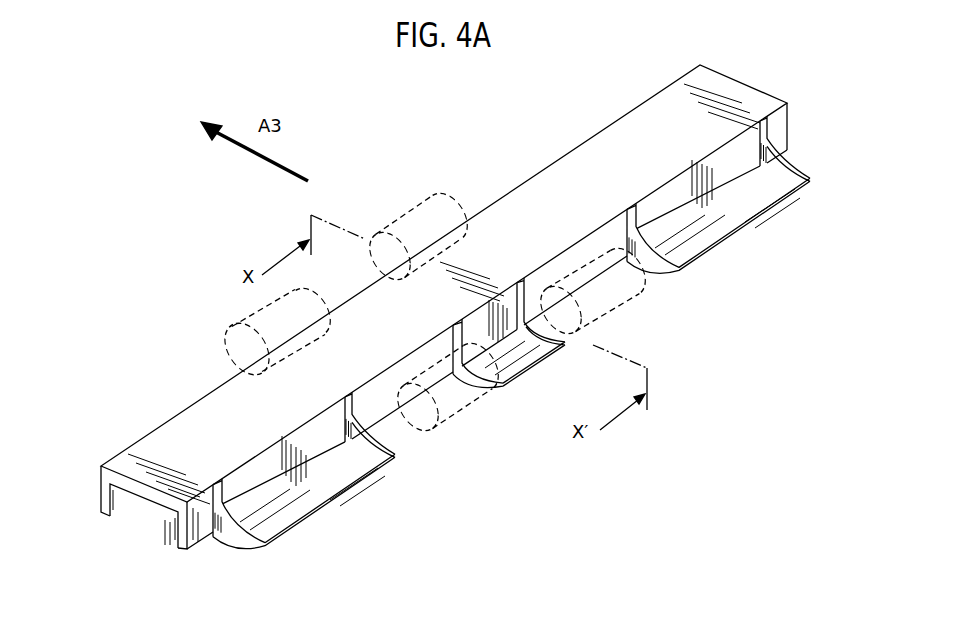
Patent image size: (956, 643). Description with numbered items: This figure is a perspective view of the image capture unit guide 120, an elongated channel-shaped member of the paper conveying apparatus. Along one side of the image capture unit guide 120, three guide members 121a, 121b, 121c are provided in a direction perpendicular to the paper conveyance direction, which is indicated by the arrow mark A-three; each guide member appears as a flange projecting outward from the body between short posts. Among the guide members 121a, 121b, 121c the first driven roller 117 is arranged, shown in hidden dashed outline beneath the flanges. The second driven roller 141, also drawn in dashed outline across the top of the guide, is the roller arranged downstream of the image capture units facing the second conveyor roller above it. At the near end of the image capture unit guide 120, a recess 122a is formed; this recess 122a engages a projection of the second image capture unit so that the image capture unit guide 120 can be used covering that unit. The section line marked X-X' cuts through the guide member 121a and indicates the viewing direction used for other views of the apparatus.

The image capture unit guide 120 is at (230, 380).
The guide member 121a is at (523, 372).
The guide member 121b is at (318, 495).
The guide member 121c is at (730, 222).
The recess 122a is at (116, 490).
The second driven roller 141 is at (414, 212).
The first driven roller 117 is at (450, 403).